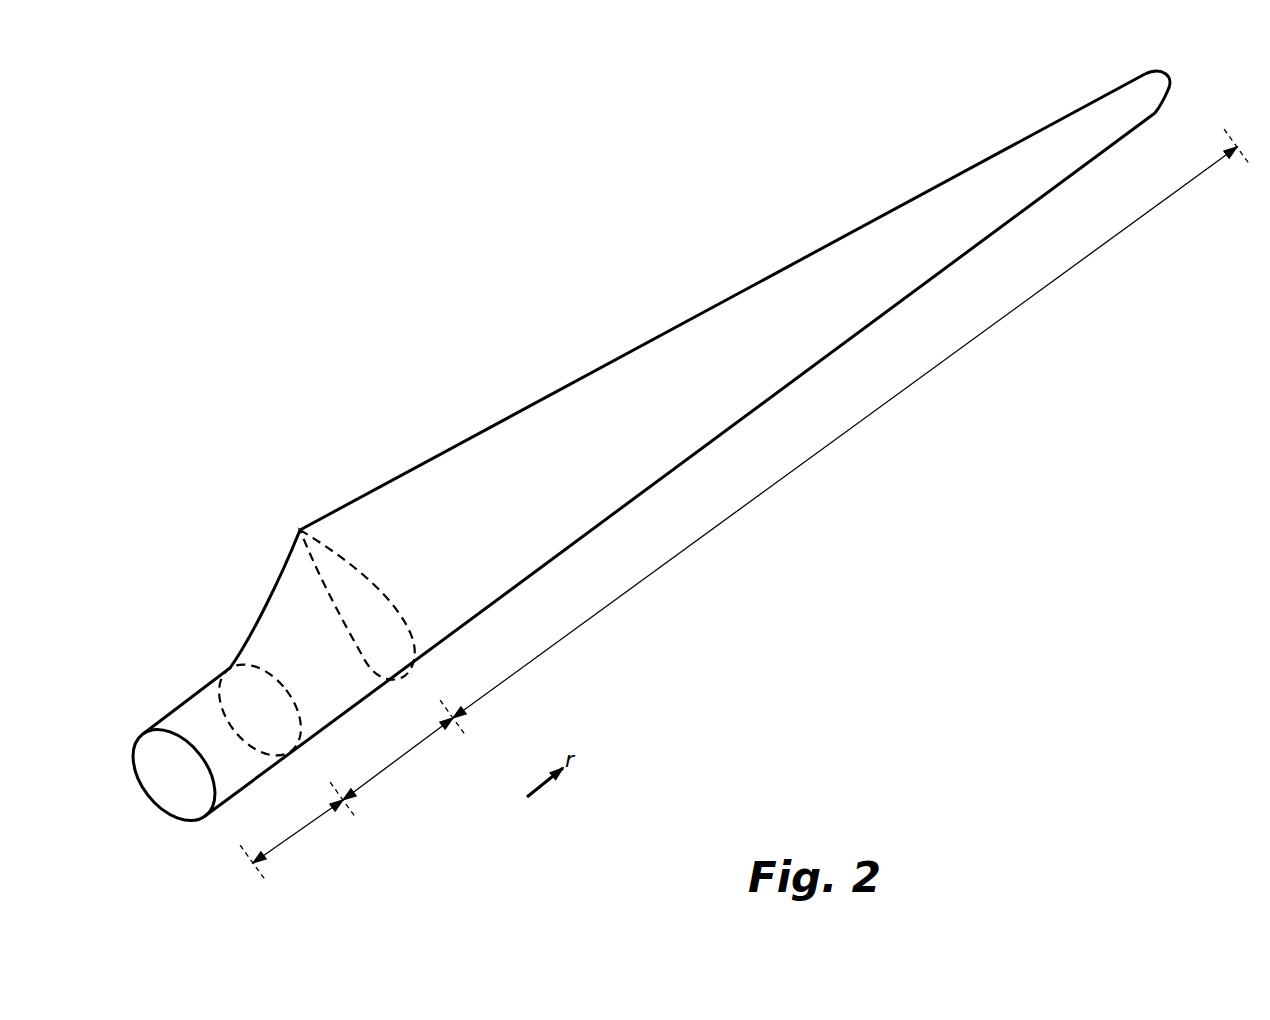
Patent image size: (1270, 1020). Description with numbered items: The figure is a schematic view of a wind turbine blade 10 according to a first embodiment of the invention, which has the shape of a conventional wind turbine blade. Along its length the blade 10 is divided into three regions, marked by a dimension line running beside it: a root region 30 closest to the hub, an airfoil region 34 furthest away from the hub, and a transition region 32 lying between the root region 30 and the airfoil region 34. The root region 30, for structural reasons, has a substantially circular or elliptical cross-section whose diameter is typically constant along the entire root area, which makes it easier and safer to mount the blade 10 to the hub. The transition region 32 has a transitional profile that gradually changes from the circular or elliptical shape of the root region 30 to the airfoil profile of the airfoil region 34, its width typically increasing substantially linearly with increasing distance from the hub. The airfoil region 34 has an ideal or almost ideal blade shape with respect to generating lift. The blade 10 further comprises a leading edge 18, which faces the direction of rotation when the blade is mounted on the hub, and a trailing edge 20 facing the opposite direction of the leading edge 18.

The wind turbine blade 10 is at (643, 453).
The leading edge 18 is at (857, 332).
The trailing edge 20 is at (863, 223).
The root region 30 is at (302, 828).
The transition region 32 is at (403, 754).
The airfoil region 34 is at (767, 489).